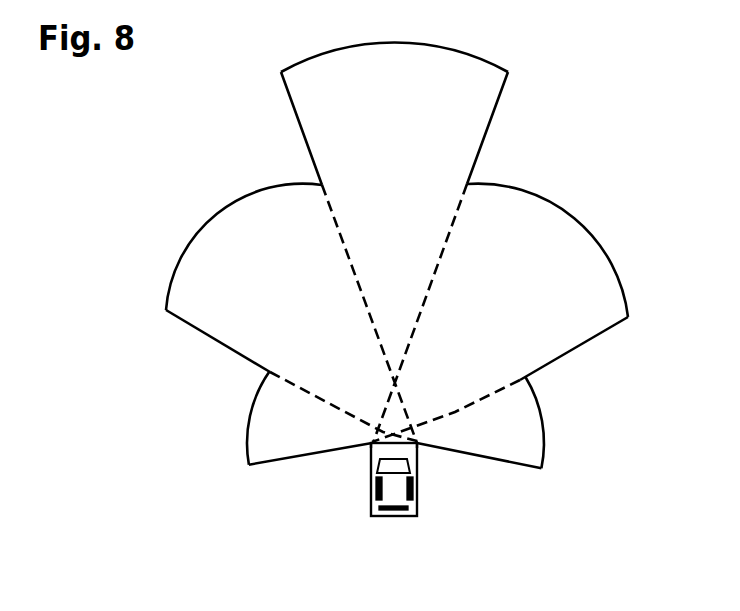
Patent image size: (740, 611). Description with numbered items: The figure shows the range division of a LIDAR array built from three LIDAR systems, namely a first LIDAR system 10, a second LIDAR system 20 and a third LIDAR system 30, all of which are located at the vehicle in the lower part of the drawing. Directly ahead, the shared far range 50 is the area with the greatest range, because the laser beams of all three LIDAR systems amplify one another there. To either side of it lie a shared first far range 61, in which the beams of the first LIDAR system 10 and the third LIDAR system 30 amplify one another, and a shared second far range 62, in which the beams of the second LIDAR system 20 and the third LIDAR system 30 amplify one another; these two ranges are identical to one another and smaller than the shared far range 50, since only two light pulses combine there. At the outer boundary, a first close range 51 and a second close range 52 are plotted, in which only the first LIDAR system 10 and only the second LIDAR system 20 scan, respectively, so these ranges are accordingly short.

The first LIDAR system 10 is at (416, 444).
The second LIDAR system 20 is at (372, 444).
The third LIDAR system 30 is at (397, 444).
The shared far range 50 is at (408, 127).
The first close range 51 is at (475, 445).
The second close range 52 is at (274, 445).
The shared first far range 61 is at (536, 297).
The shared second far range 62 is at (295, 297).